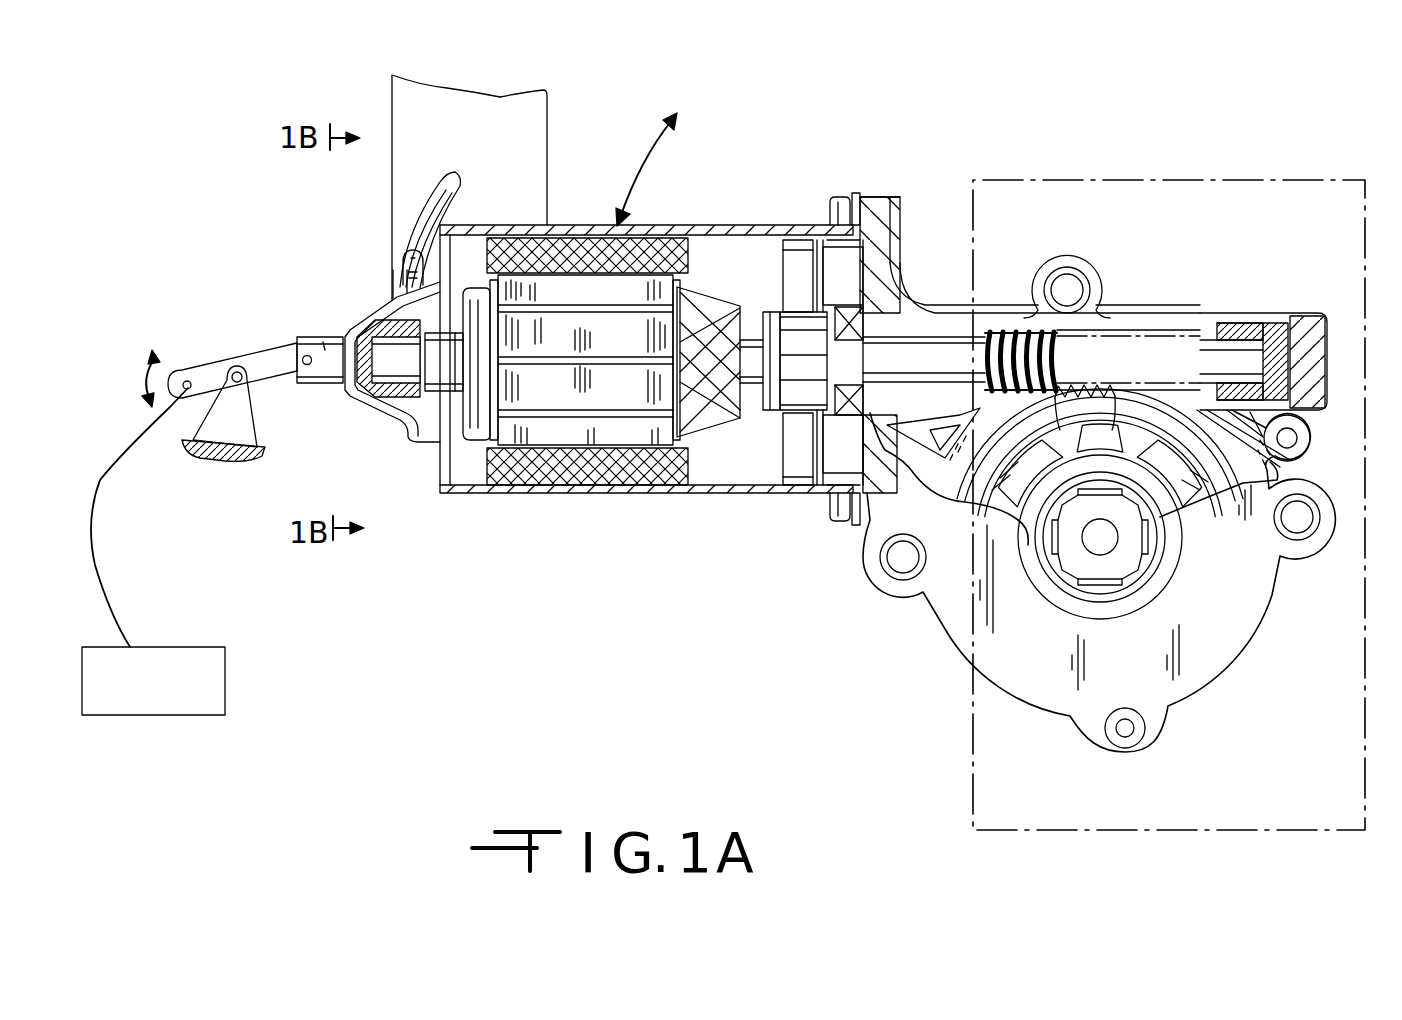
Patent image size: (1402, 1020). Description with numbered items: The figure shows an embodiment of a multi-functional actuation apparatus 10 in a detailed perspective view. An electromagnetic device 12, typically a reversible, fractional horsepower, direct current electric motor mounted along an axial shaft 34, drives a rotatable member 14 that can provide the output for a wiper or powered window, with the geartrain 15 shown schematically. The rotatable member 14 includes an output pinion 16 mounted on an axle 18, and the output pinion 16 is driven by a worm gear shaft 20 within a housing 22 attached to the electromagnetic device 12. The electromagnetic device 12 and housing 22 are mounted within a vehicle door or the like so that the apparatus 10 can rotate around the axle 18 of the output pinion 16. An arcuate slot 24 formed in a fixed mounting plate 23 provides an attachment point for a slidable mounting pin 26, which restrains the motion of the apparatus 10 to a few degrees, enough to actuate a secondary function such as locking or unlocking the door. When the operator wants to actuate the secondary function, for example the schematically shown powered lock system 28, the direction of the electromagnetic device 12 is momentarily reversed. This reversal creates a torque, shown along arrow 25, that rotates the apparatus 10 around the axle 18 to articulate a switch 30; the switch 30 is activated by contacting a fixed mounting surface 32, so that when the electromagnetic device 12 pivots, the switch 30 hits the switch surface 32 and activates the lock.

The apparatus 10 is at (858, 116).
The electromagnetic device 12 is at (640, 494).
The rotatable member 14 is at (957, 648).
The geartrain 15 is at (1288, 762).
The output pinion 16 is at (1145, 535).
The axle 18 is at (1108, 552).
The worm gear shaft 20 is at (1010, 330).
The housing 22 is at (900, 197).
The fixed mounting plate 23 is at (514, 135).
The arcuate slot 24 is at (446, 186).
The arrow 25 is at (642, 166).
The slidable mounting pin 26 is at (400, 255).
The powered lock system 28 is at (164, 697).
The switch 30 is at (312, 386).
The fixed mounting surface 32 is at (238, 370).
The axial shaft 34 is at (445, 460).